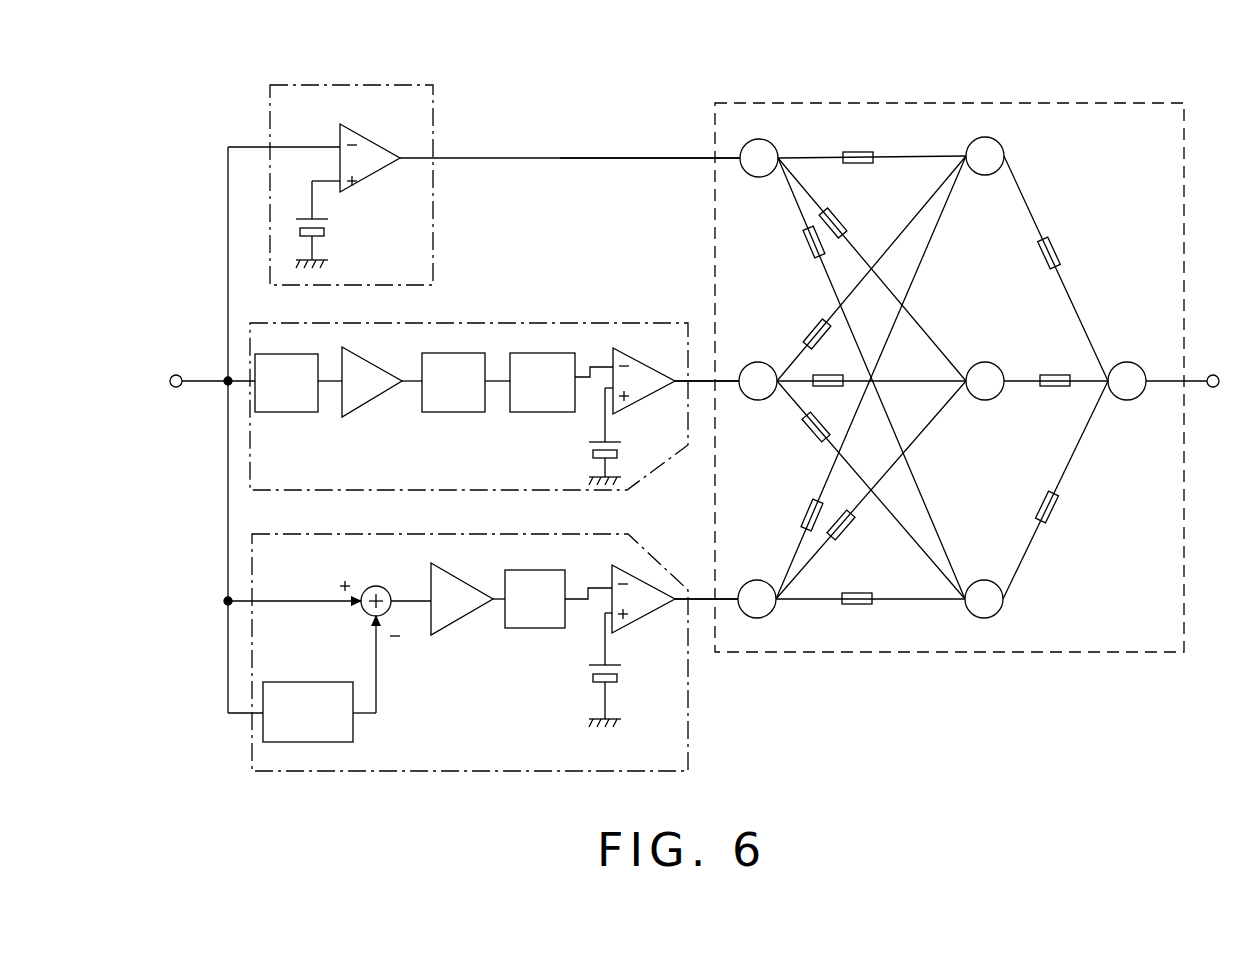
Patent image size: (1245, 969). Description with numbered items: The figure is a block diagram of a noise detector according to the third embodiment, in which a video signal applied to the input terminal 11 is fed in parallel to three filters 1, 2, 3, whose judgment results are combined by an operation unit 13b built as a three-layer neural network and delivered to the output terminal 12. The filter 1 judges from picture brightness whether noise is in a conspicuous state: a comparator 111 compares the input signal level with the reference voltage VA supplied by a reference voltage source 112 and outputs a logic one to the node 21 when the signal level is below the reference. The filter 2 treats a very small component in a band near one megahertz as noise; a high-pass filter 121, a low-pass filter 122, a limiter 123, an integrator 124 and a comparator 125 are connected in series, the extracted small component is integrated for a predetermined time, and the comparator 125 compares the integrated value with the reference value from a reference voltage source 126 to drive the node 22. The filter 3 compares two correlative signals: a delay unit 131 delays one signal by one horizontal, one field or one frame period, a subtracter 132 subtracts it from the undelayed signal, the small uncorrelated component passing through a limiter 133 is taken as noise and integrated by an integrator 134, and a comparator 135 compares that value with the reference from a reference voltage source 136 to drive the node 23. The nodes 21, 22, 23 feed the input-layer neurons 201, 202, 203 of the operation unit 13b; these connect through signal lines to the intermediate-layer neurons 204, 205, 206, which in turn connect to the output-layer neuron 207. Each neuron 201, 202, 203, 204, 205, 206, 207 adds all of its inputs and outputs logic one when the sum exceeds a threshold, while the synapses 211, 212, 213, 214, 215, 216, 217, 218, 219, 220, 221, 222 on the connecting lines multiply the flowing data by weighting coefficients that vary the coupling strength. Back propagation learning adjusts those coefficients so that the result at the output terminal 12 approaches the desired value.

The filter 1 is at (412, 84).
The filter 2 is at (505, 322).
The filter 3 is at (490, 533).
The input terminal 11 is at (176, 374).
The output terminal 12 is at (1214, 374).
The operation unit 13b is at (1113, 102).
The node 21 is at (612, 156).
The node 22 is at (704, 374).
The node 23 is at (700, 594).
The comparator 111 is at (370, 141).
The reference voltage source 112 is at (326, 240).
The high-pass filter 121 is at (286, 413).
The low-pass filter 122 is at (376, 404).
The limiter 123 is at (457, 413).
The integrator 124 is at (545, 413).
The comparator 125 is at (652, 404).
The reference voltage source 126 is at (620, 453).
The delay unit 131 is at (354, 722).
The subtracter 132 is at (378, 586).
The limiter 133 is at (465, 622).
The integrator 134 is at (543, 628).
The comparator 135 is at (648, 622).
The reference voltage source 136 is at (620, 676).
The neuron 201 is at (760, 139).
The neuron 202 is at (757, 401).
The neuron 203 is at (763, 618).
The neuron 204 is at (990, 137).
The neuron 205 is at (980, 362).
The neuron 206 is at (1003, 604).
The neuron 207 is at (1136, 362).
The synapse 211 is at (802, 244).
The synapse 212 is at (872, 206).
The synapse 213 is at (860, 151).
The synapse 214 is at (810, 328).
The synapse 215 is at (818, 375).
The synapse 216 is at (806, 434).
The synapse 217 is at (802, 516).
The synapse 218 is at (836, 536).
The synapse 219 is at (858, 606).
The synapse 220 is at (1056, 516).
The synapse 221 is at (1056, 374).
The synapse 222 is at (1062, 246).